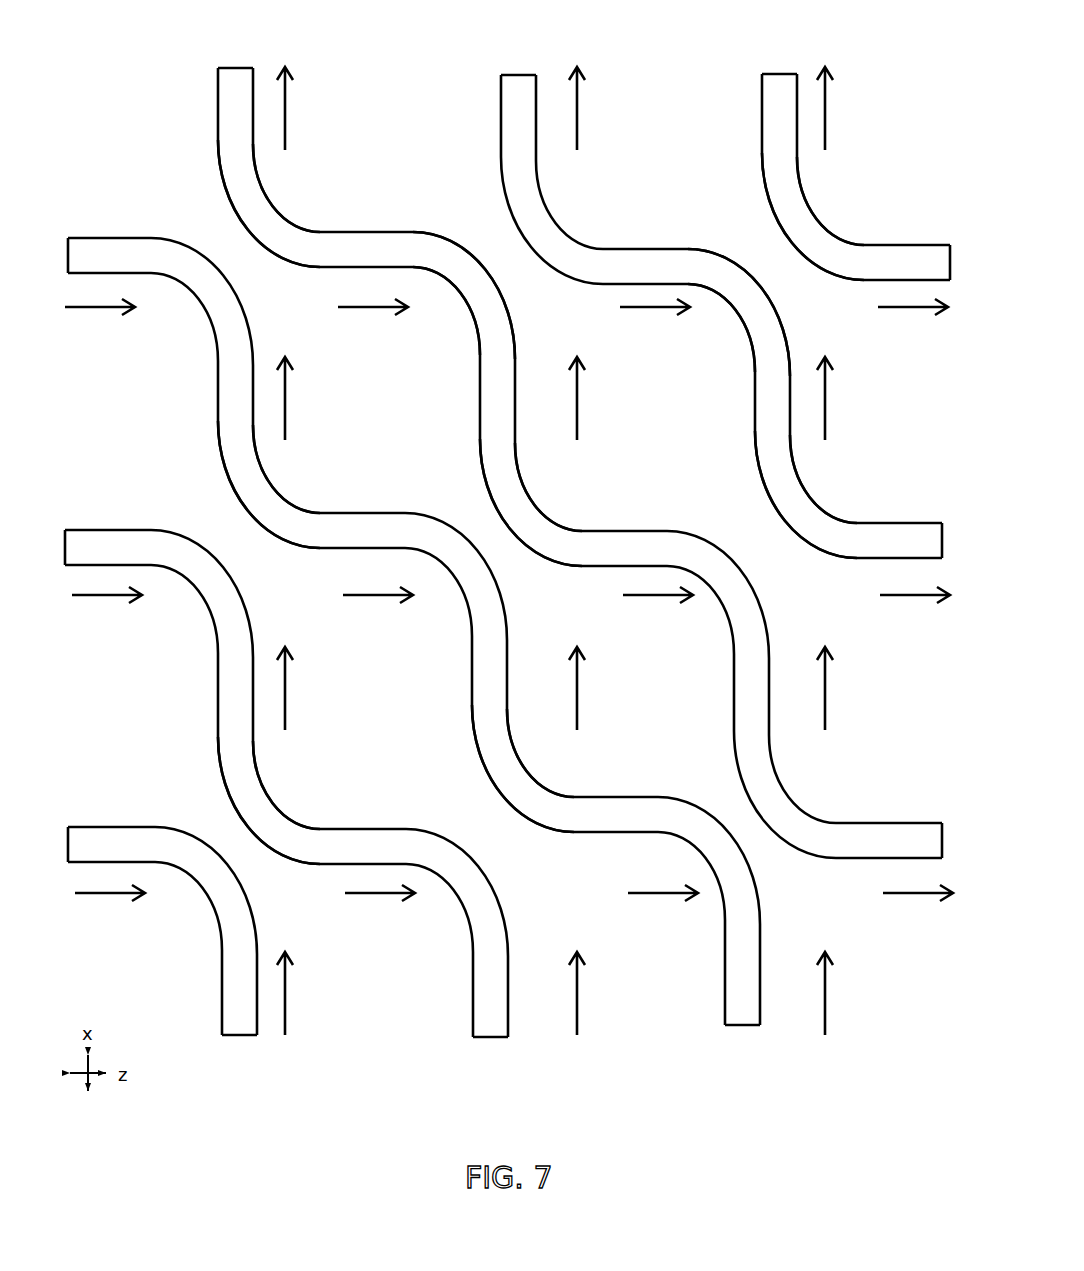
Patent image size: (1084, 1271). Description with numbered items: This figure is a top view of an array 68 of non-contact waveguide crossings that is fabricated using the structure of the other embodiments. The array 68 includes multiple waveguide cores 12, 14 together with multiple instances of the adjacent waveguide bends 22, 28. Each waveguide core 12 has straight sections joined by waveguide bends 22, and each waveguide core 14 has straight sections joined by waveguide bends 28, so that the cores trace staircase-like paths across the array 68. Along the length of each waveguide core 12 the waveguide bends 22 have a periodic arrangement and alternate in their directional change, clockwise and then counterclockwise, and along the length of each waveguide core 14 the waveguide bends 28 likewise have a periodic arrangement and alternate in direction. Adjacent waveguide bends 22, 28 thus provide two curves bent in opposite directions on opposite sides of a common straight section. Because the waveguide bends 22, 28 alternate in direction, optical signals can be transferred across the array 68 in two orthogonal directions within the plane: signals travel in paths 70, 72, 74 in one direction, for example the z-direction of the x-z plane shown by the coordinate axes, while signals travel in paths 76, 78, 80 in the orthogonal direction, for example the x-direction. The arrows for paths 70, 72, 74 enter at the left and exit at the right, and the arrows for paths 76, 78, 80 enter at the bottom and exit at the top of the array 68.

The array of non-contact waveguide crossings 68 is at (137, 98).
The waveguide core 12 is at (135, 233).
The waveguide core 14 is at (360, 225).
The waveguide bend 22 is at (748, 308).
The waveguide bend 28 is at (287, 232).
The path 70 is at (85, 311).
The path 72 is at (92, 599).
The path 74 is at (95, 897).
The path 76 is at (286, 112).
The path 78 is at (578, 112).
The path 80 is at (826, 112).